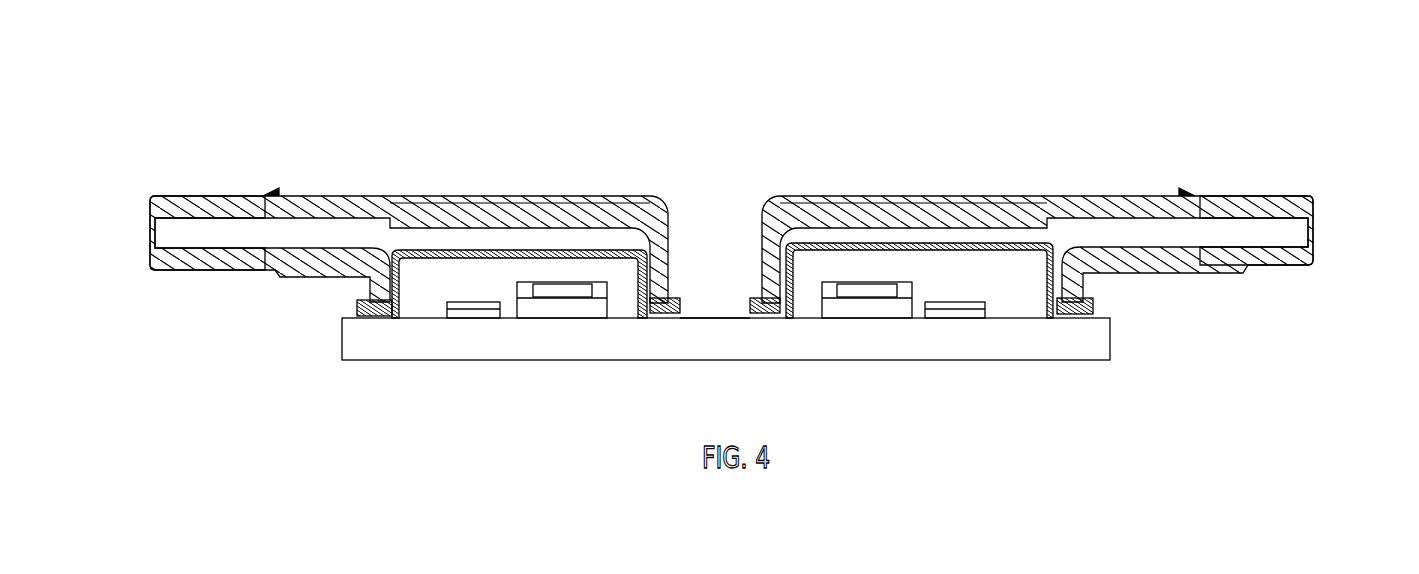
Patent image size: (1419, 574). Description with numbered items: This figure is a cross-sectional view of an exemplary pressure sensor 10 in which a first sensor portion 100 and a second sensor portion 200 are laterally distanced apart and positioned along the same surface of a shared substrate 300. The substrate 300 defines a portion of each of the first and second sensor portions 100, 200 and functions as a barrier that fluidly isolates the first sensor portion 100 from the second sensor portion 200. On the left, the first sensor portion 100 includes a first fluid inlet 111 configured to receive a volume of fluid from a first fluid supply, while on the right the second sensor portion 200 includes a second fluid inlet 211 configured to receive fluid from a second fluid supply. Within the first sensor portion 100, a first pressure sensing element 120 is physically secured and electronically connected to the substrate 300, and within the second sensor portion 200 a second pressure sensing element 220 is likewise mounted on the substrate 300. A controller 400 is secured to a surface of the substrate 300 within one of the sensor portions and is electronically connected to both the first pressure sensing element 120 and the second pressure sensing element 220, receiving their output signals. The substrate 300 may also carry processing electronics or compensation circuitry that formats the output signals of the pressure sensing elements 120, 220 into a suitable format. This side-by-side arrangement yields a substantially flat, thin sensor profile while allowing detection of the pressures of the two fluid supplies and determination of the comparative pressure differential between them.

The pressure sensor 10 is at (738, 170).
The first sensor portion 100 is at (474, 136).
The first fluid inlet 111 is at (150, 237).
The first pressure sensing element 120 is at (558, 282).
The second sensor portion 200 is at (980, 136).
The second fluid inlet 211 is at (1313, 236).
The second pressure sensing element 220 is at (863, 282).
The substrate 300 is at (341, 320).
The controller 400 is at (473, 292).